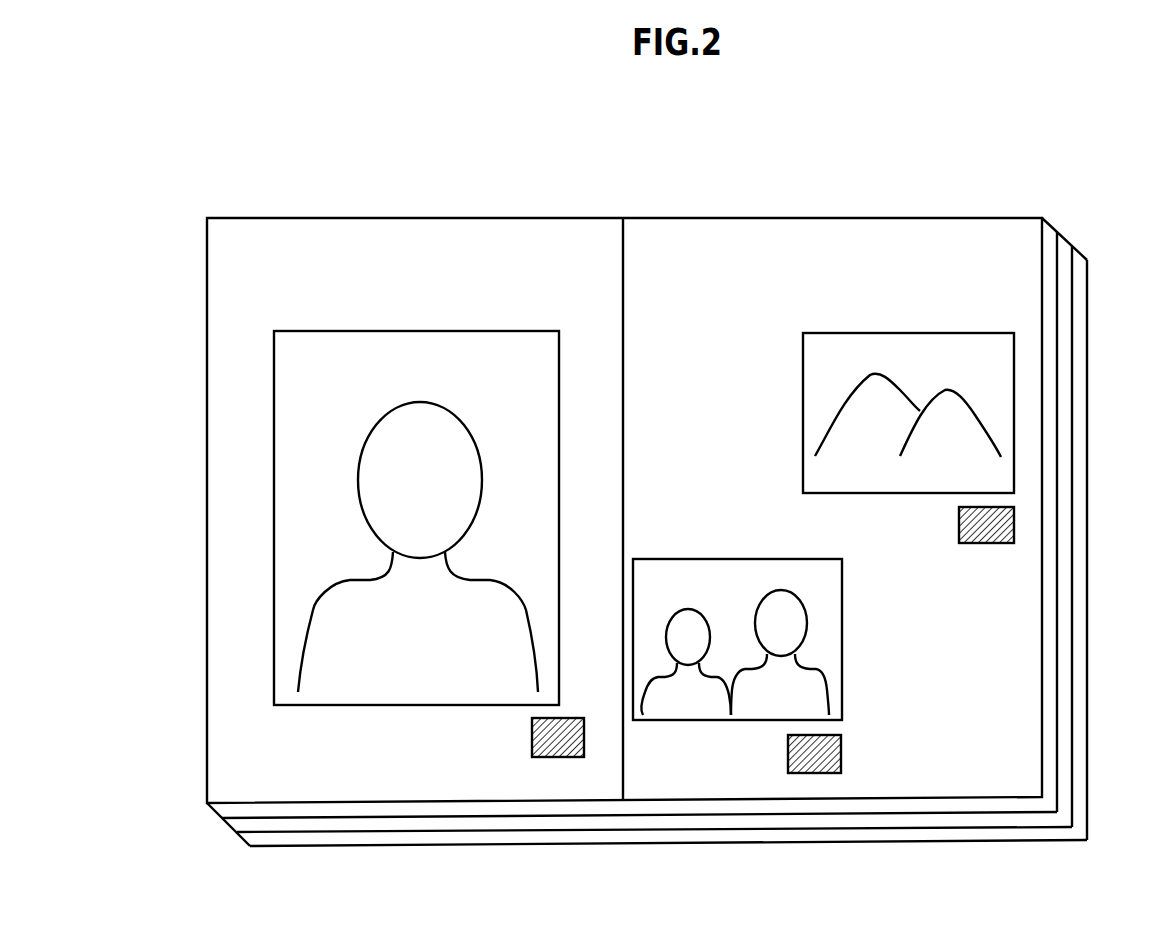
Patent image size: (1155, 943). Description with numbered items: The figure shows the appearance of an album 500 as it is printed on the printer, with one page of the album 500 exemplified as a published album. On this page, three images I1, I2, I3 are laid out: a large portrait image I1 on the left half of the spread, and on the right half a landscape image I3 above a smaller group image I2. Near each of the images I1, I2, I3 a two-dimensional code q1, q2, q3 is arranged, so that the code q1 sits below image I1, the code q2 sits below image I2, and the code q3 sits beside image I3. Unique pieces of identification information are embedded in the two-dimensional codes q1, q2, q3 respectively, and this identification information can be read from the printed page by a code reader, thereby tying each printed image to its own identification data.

The album 500 is at (703, 217).
The image I1 is at (415, 330).
The image I2 is at (738, 558).
The image I3 is at (918, 333).
The two-dimensional code q1 is at (558, 757).
The two-dimensional code q2 is at (815, 773).
The two-dimensional code q3 is at (1014, 523).